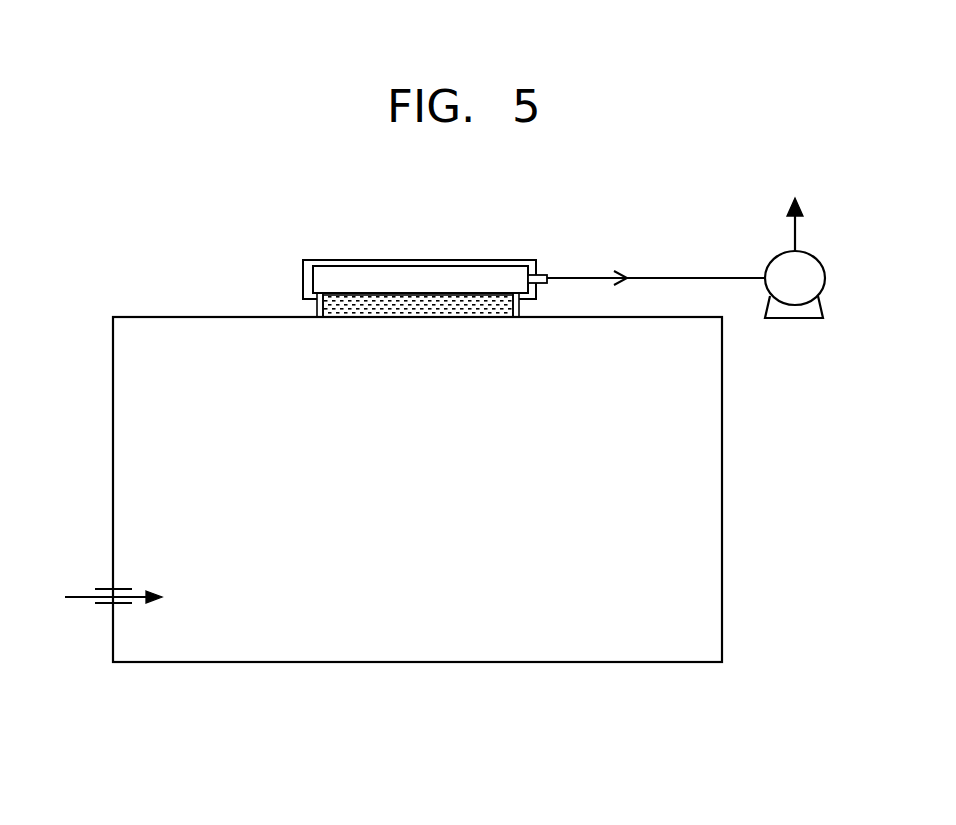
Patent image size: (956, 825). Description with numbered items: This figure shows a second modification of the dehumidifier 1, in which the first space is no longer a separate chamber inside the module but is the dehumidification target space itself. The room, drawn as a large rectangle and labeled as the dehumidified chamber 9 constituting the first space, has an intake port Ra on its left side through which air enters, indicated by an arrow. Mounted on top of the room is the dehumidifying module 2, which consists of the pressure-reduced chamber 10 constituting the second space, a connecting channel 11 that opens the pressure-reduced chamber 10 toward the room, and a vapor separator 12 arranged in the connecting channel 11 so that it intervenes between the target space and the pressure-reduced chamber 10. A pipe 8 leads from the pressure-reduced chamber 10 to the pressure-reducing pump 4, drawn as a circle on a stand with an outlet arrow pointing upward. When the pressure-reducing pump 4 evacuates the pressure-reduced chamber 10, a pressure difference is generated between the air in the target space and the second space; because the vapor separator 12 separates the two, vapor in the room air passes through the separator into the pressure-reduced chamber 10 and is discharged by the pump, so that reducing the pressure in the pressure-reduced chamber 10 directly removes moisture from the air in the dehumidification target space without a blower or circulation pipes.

The dehumidifier 1 is at (579, 237).
The dehumidifying module 2 is at (421, 245).
The pressure-reducing pump 4 is at (825, 277).
The pipe 8 is at (693, 277).
The dehumidified chamber 9 is at (722, 553).
The pressure-reduced chamber 10 is at (295, 212).
The connecting channel 11 is at (320, 297).
The vapor separator 12 is at (358, 303).
The intake port Ra is at (103, 589).